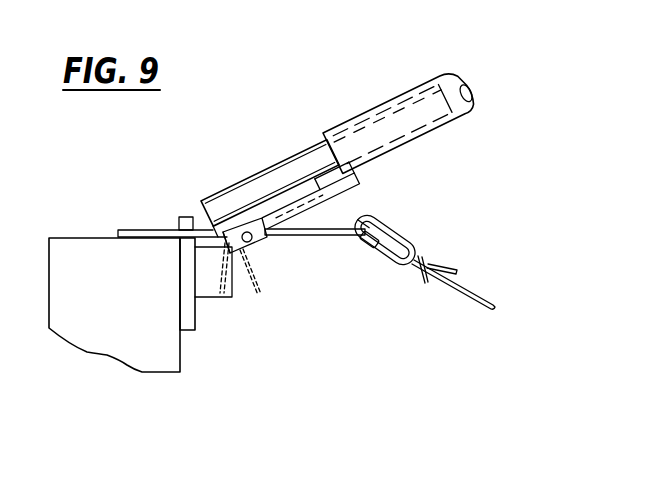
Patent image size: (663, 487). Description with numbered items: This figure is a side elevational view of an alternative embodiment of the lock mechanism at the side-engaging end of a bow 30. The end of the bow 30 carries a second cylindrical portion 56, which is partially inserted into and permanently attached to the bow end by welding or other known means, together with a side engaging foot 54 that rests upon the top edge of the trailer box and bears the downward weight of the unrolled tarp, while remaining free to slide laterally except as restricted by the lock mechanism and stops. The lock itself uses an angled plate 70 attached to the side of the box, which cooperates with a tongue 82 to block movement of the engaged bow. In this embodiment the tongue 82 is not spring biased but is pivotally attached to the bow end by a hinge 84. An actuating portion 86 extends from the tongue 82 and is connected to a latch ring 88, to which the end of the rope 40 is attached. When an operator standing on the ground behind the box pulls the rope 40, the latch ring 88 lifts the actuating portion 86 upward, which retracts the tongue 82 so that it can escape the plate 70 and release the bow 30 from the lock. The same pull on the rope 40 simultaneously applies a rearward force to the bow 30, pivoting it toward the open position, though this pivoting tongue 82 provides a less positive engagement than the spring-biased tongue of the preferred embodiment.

The bow 30 is at (403, 88).
The second cylindrical portion 56 is at (252, 188).
The actuating portion 86 is at (310, 173).
The side engaging foot 54 is at (140, 232).
The angled plate 70 is at (203, 285).
The tongue 82 is at (259, 296).
The hinge 84 is at (255, 248).
The latch ring 88 is at (390, 271).
The rope 40 is at (468, 288).